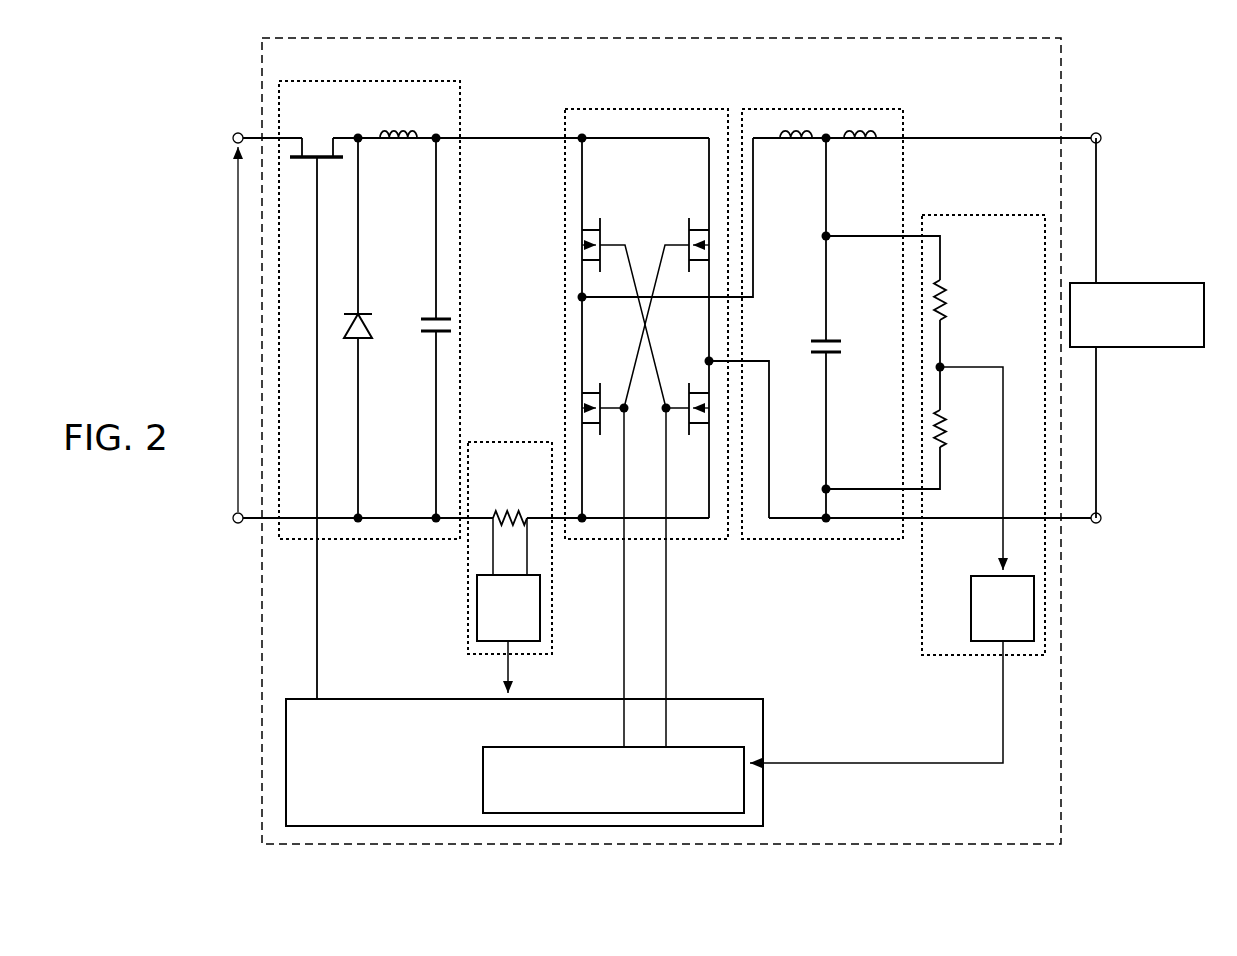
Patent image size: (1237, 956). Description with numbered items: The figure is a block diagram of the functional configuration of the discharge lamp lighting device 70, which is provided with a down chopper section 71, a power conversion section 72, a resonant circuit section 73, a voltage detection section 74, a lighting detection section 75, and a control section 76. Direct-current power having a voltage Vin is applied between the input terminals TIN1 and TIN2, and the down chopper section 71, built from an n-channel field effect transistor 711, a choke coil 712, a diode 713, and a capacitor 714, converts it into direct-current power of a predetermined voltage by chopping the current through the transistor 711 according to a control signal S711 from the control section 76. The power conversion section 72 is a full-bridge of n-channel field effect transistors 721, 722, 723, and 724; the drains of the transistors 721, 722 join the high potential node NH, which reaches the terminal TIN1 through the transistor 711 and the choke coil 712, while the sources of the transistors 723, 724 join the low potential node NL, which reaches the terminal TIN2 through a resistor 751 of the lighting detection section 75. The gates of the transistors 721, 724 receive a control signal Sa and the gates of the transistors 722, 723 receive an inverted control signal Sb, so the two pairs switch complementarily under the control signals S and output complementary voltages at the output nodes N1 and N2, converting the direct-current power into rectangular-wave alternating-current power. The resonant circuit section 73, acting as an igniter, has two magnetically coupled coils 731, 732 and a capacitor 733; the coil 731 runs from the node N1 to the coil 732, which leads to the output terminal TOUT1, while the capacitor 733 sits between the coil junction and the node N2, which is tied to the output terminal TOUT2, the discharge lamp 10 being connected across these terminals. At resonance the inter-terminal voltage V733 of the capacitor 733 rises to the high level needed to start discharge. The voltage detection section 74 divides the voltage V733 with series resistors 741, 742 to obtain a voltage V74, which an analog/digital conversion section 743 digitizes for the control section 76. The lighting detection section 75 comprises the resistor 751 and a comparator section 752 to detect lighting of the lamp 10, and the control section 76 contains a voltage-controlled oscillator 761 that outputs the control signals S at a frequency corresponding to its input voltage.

The discharge lamp lighting device 70 is at (1062, 38).
The down chopper section 71 is at (402, 81).
The n-channel field effect transistor 711 is at (317, 152).
The choke coil 712 is at (398, 148).
The diode 713 is at (364, 311).
The capacitor 714 is at (428, 334).
The power conversion section 72 is at (652, 109).
The n-channel field effect transistor 721 is at (604, 220).
The n-channel field effect transistor 722 is at (684, 220).
The n-channel field effect transistor 723 is at (604, 385).
The n-channel field effect transistor 724 is at (684, 385).
The resonant circuit section 73 is at (818, 109).
The coil 731 is at (796, 148).
The coil 732 is at (858, 148).
The capacitor 733 is at (838, 356).
The voltage detection section 74 is at (975, 215).
The resistor 741 is at (950, 300).
The resistor 742 is at (948, 430).
The analog/digital conversion section 743 is at (985, 576).
The lighting detection section 75 is at (505, 442).
The resistor 751 is at (500, 514).
The comparator section 752 is at (476, 612).
The control section 76 is at (727, 699).
The voltage-controlled oscillator 761 is at (482, 785).
The discharge lamp 10 is at (1098, 283).
The input terminal TIN1 is at (238, 131).
The input terminal TIN2 is at (238, 525).
The output terminal TOUT1 is at (1097, 131).
The output terminal TOUT2 is at (1097, 525).
The voltage Vin is at (216, 329).
The high potential node NH is at (479, 137).
The low potential node NL is at (452, 526).
The output node N1 is at (578, 297).
The output node N2 is at (714, 357).
The control signal S711 is at (322, 640).
The control signal Sa is at (671, 582).
The control signal Sb is at (629, 618).
The control signals S is at (755, 565).
The inter-terminal voltage V733 is at (837, 250).
The voltage V74 is at (946, 360).